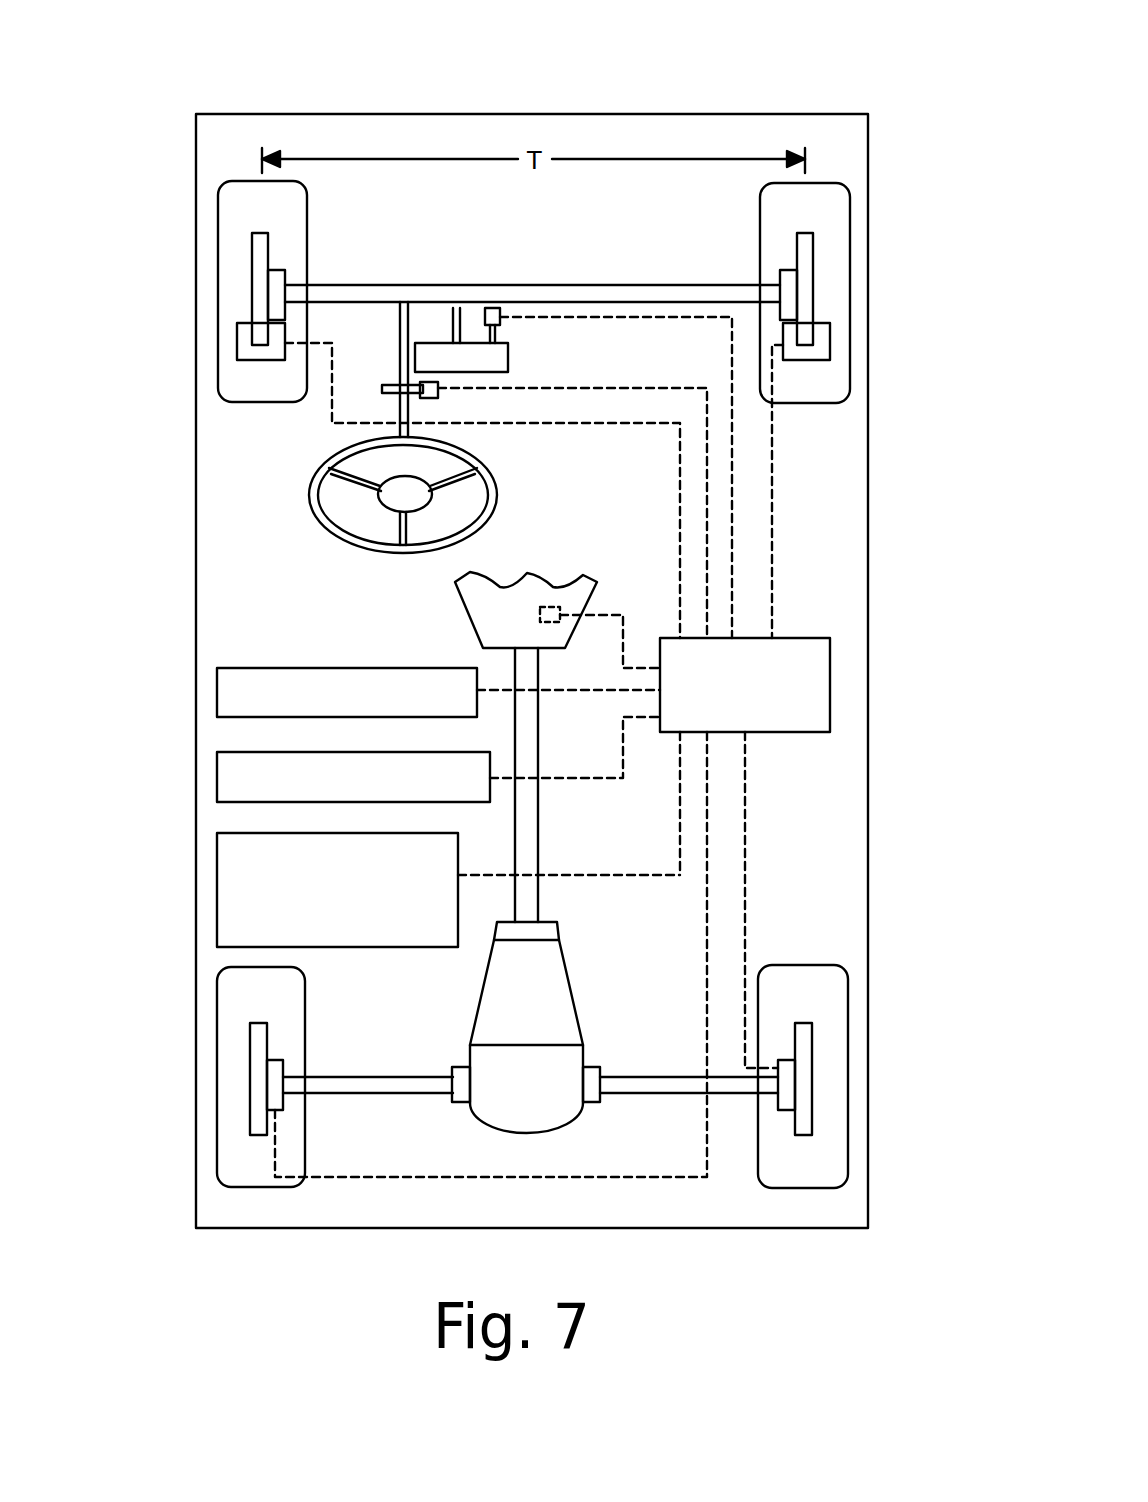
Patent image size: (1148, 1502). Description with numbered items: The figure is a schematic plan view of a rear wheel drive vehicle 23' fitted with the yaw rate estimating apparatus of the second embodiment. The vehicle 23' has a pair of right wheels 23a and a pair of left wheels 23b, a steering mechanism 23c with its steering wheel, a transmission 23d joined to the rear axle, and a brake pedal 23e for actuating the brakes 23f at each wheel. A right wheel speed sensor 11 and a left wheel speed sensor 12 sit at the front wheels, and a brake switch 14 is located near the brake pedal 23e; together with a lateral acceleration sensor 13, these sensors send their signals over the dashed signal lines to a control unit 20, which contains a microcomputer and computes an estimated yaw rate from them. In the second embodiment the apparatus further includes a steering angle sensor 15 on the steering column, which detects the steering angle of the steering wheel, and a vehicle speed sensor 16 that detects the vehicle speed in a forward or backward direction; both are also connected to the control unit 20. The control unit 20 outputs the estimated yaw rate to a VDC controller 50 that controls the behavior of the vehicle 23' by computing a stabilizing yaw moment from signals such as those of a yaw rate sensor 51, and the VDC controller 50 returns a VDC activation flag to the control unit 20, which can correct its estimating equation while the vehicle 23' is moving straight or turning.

The vehicle 23' is at (547, 616).
The right wheels 23a is at (850, 205).
The left wheels 23b is at (218, 213).
The steering mechanism 23c is at (397, 412).
The transmission 23d is at (532, 590).
The brake pedal 23e is at (508, 357).
The brakes 23f is at (285, 275).
The right wheel speed sensor 11 is at (830, 345).
The left wheel speed sensor 12 is at (237, 338).
The lateral acceleration sensor 13 is at (217, 873).
The brake switch 14 is at (500, 308).
The steering angle sensor 15 is at (438, 398).
The vehicle speed sensor 16 is at (540, 615).
The control unit 20 is at (830, 668).
The VDC controller 50 is at (217, 775).
The yaw rate sensor 51 is at (217, 690).